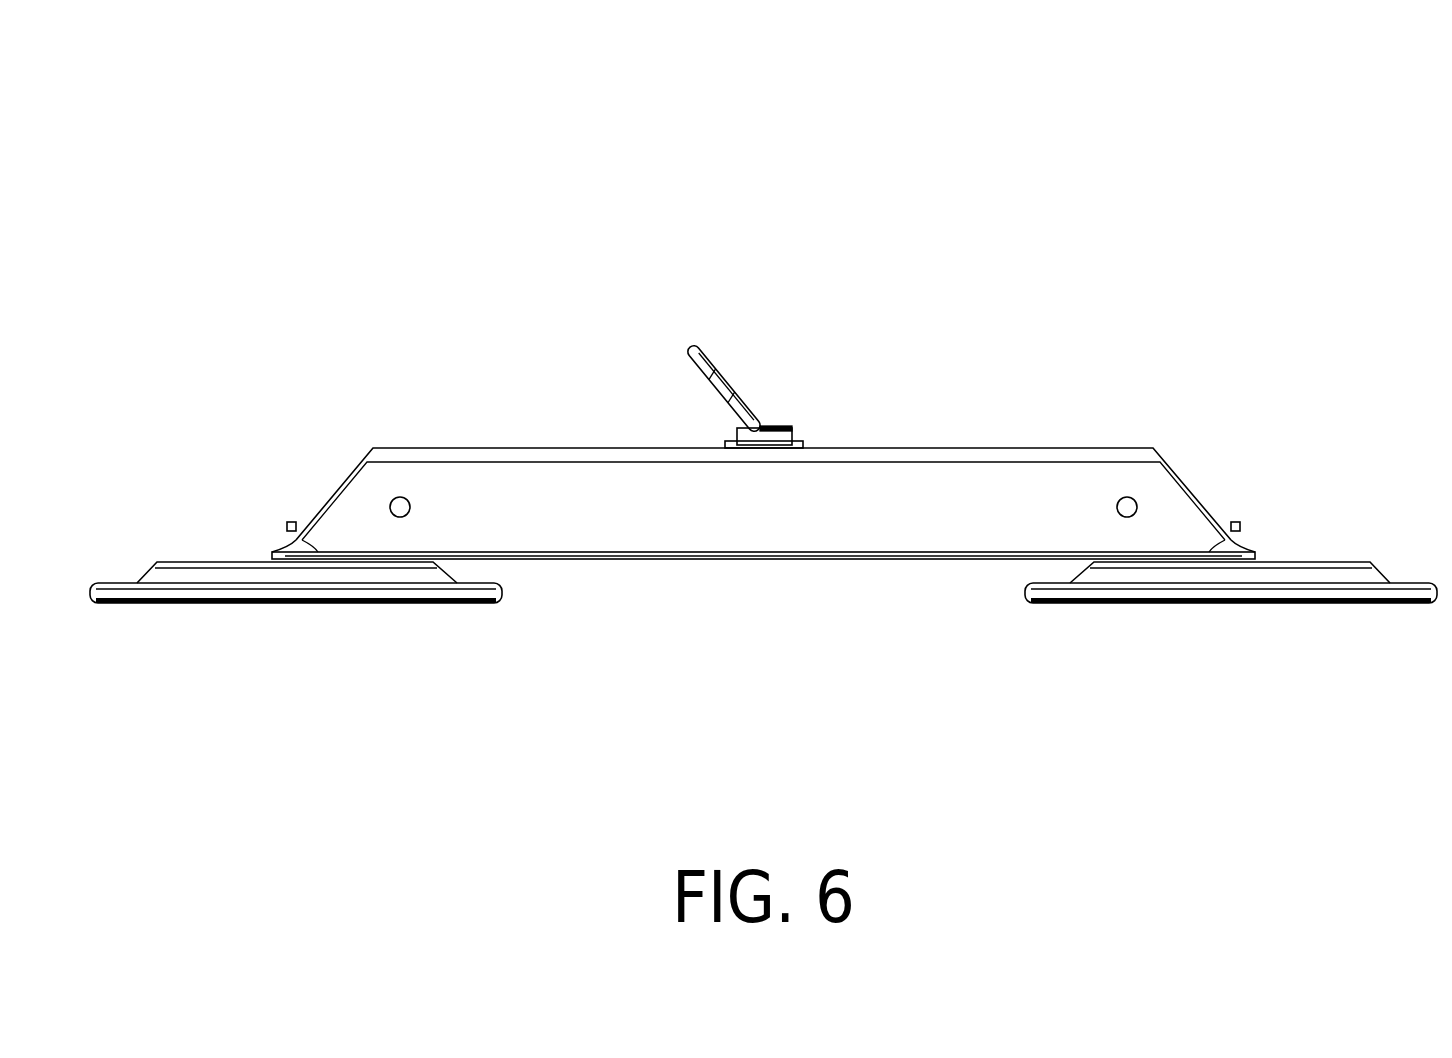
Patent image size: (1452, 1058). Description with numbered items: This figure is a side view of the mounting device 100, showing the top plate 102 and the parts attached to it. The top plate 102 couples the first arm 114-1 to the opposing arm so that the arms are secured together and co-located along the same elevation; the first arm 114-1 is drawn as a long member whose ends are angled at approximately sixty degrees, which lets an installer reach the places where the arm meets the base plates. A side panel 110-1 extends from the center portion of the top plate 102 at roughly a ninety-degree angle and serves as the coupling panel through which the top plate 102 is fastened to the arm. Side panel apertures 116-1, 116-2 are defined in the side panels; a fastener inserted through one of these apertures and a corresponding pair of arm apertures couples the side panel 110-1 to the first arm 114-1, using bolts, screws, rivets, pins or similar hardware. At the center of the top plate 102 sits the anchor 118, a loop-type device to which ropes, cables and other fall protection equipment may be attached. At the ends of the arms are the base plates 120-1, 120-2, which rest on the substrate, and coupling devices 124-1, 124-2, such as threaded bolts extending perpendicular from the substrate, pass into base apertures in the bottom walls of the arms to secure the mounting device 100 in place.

The mounting device 100 is at (147, 59).
The top plate 102 is at (518, 447).
The side panel 110-1 is at (640, 510).
The first arm 114-1 is at (280, 547).
The side panel aperture 116-1 is at (1127, 517).
The side panel aperture 116-2 is at (400, 517).
The anchor 118 is at (690, 345).
The base plate 120-1 is at (1344, 575).
The base plate 120-2 is at (183, 575).
The coupling device 124-1 is at (1237, 527).
The coupling device 124-2 is at (290, 527).